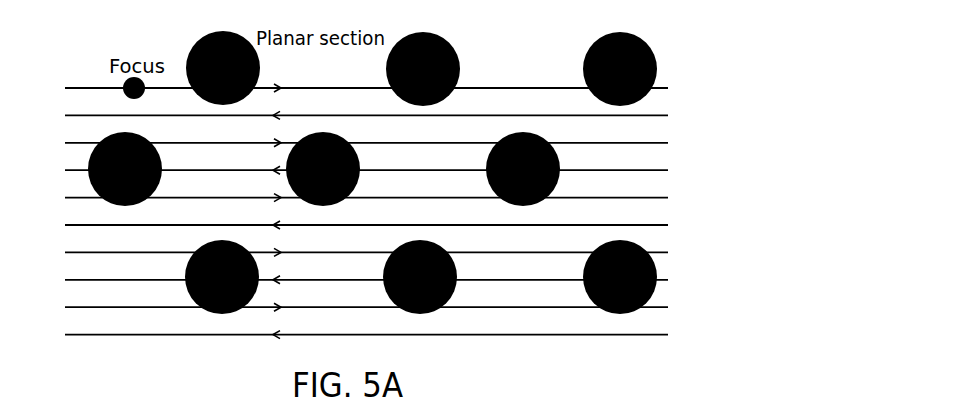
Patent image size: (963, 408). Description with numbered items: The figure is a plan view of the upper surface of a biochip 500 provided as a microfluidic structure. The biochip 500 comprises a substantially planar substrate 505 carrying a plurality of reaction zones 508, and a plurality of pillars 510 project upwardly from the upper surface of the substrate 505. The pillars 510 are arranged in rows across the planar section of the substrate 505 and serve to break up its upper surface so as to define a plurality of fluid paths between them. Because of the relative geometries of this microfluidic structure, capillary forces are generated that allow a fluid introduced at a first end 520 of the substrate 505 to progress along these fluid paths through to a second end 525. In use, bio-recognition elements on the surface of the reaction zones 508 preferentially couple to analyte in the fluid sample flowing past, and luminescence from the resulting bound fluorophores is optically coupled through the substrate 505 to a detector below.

The biochip 500 is at (403, 213).
The substrate 505 is at (522, 87).
The reaction zones 508 is at (327, 265).
The pillars 510 is at (657, 63).
The first end 520 is at (58, 227).
The second end 525 is at (843, 220).